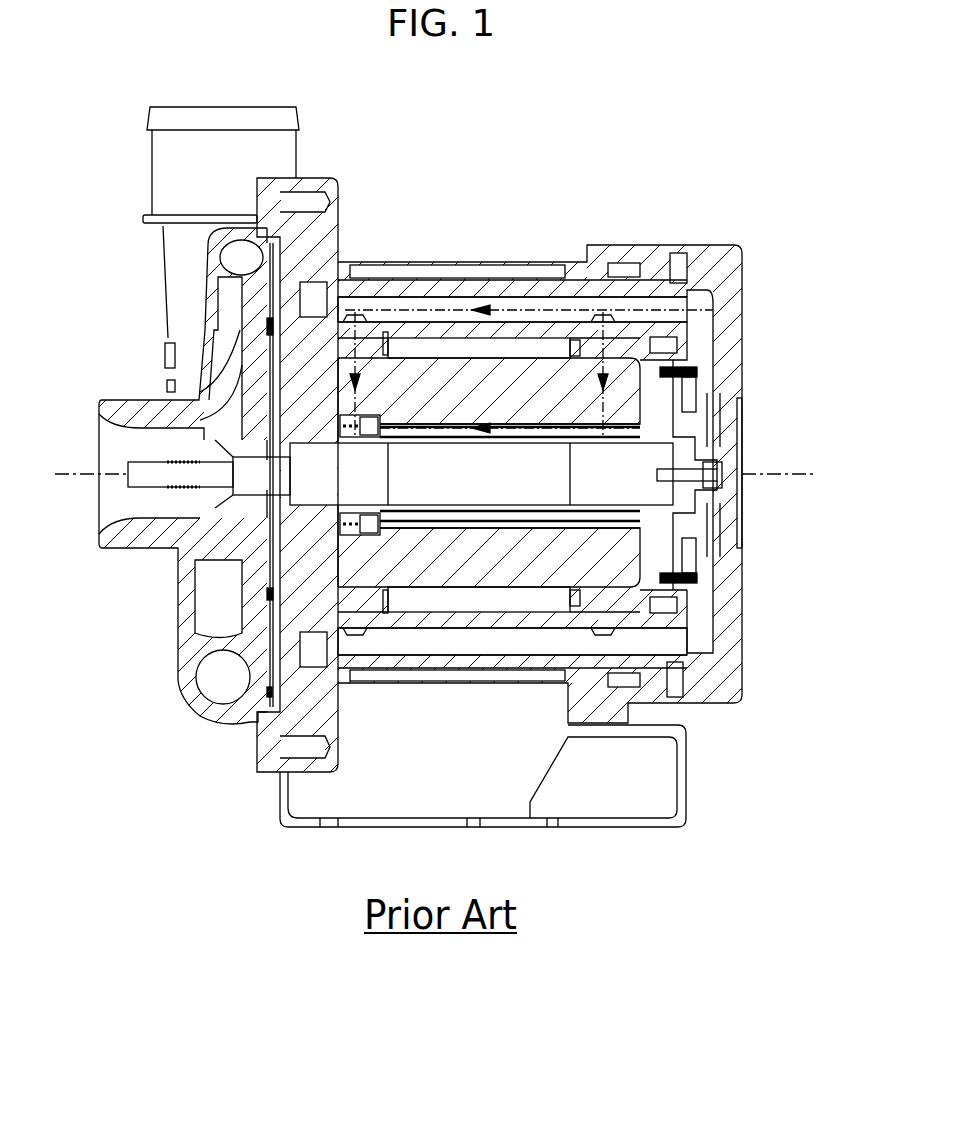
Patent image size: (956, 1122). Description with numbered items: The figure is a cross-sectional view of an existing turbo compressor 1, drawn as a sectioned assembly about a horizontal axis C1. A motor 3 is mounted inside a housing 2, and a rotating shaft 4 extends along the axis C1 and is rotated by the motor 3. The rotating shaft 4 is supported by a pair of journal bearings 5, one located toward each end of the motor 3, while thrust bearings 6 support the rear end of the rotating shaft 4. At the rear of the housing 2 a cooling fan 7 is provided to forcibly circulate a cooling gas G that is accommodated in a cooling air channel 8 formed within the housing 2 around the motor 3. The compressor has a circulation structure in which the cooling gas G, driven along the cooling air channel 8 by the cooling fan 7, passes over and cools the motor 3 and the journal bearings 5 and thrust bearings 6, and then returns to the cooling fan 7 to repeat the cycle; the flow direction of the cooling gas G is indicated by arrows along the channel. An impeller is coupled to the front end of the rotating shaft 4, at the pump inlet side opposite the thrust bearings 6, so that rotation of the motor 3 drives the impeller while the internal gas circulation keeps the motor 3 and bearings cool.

The turbo compressor 1 is at (108, 149).
The housing 2 is at (332, 215).
The motor 3 is at (513, 383).
The rotating shaft 4 is at (634, 410).
The journal bearings 5 is at (353, 413).
The thrust bearings 6 is at (690, 408).
The cooling fan 7 is at (720, 440).
The cooling air channel 8 is at (460, 300).
The cooling gas G is at (568, 307).
The central axis C1 is at (777, 475).